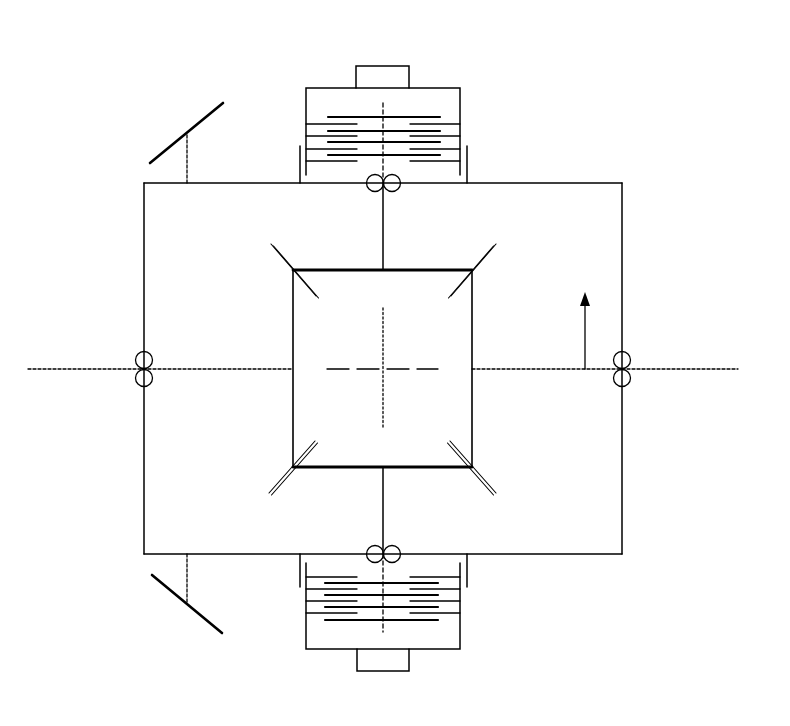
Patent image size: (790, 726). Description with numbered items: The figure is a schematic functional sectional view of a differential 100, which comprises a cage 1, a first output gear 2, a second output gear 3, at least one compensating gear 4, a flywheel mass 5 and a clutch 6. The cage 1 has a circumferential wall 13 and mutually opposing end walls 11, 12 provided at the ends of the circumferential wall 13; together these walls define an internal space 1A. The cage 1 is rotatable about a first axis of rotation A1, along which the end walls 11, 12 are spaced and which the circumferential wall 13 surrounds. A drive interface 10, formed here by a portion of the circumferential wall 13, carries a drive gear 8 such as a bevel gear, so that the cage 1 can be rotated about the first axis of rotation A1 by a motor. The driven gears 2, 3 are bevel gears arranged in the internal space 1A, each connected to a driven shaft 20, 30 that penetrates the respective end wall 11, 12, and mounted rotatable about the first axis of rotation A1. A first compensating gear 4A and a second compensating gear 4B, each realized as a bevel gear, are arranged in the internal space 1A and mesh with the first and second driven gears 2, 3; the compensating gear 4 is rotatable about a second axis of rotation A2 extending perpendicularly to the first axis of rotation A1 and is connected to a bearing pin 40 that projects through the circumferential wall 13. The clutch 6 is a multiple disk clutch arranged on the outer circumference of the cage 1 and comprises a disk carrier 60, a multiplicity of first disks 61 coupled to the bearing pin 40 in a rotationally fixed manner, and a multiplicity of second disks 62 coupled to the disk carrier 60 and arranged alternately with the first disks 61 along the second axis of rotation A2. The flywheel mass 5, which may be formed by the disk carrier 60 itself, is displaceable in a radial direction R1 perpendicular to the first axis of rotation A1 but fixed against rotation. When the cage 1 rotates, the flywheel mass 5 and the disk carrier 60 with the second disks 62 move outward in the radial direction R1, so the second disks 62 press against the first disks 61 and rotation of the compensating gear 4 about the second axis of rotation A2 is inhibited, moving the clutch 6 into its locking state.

The differential 100 is at (100, 67).
The cage 1 is at (574, 183).
The internal space 1A is at (577, 472).
The drive interface 10 is at (186, 184).
The end wall 11 is at (144, 266).
The end wall 12 is at (622, 267).
The circumferential wall 13 is at (573, 556).
The first output gear 2 is at (293, 312).
The second output gear 3 is at (472, 312).
The compensating gear 4 is at (382, 370).
The first compensating gear 4A is at (330, 270).
The second compensating gear 4B is at (330, 467).
The bearing pin 40 is at (385, 222).
The flywheel mass 5 is at (383, 79).
The clutch 6 is at (432, 82).
The disk carrier 60 is at (306, 100).
The first disks 61 is at (340, 116).
The second disks 62 is at (450, 120).
The drive gear 8 is at (198, 122).
The driven shaft 20 is at (65, 370).
The driven shaft 30 is at (700, 370).
The first axis of rotation A1 is at (415, 370).
The second axis of rotation A2 is at (384, 325).
The radial direction R1 is at (573, 330).